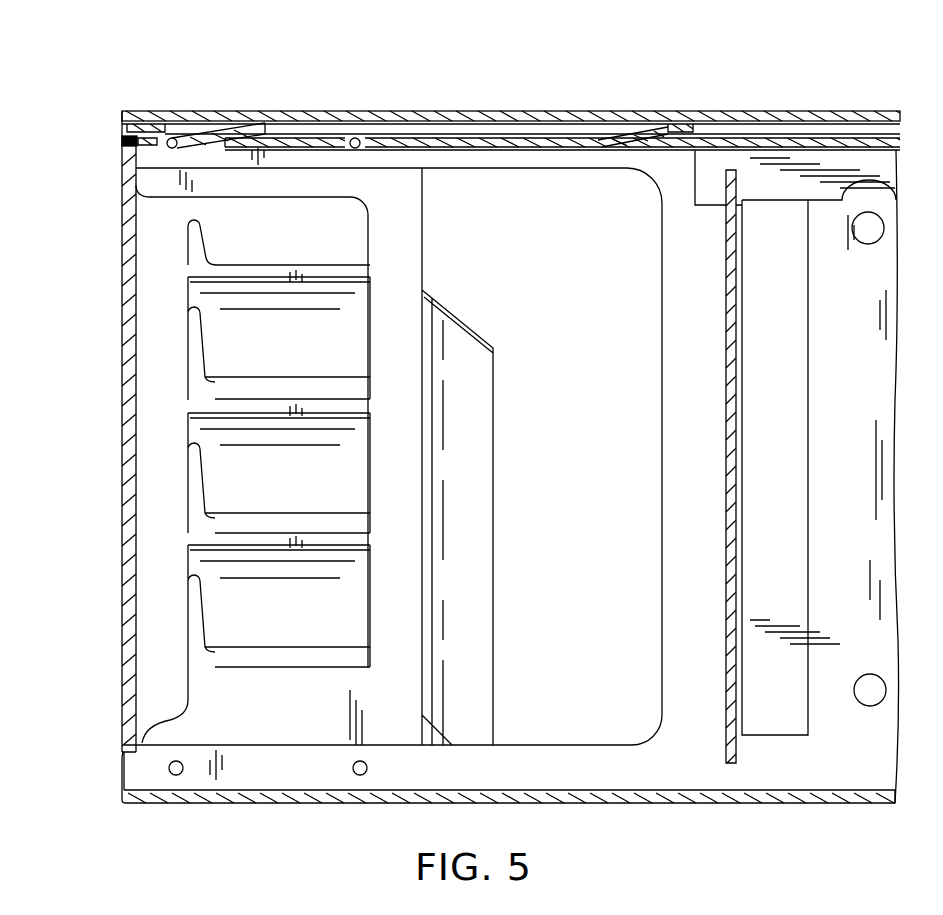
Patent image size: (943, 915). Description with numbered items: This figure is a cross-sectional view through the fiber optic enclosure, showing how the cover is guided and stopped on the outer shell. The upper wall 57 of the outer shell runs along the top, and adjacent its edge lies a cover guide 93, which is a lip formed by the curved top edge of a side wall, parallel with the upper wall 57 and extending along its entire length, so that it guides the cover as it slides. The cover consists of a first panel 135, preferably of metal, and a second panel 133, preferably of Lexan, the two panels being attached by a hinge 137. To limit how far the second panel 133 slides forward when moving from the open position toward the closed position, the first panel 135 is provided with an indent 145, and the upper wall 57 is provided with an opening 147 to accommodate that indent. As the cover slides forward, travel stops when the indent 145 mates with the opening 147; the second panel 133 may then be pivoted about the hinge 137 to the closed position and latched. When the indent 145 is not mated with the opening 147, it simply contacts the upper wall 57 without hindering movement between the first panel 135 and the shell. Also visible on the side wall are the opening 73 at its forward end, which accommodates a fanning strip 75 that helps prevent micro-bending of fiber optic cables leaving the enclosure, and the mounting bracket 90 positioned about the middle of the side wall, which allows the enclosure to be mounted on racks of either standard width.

The upper wall 57 is at (885, 140).
The opening 73 is at (662, 462).
The fanning strip 75 is at (190, 515).
The mounting bracket 90 is at (728, 170).
The cover guide 93 is at (178, 110).
The second panel 133 is at (120, 295).
The first panel 135 is at (395, 124).
The hinge 137 is at (125, 138).
The indent 145 is at (180, 139).
The opening 147 is at (162, 148).